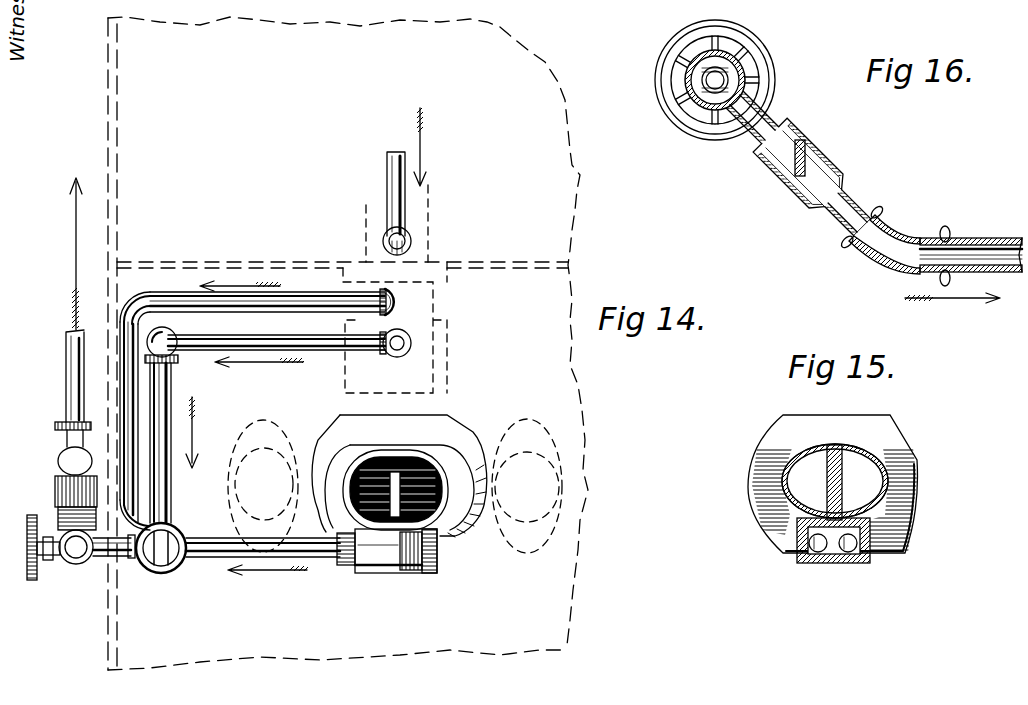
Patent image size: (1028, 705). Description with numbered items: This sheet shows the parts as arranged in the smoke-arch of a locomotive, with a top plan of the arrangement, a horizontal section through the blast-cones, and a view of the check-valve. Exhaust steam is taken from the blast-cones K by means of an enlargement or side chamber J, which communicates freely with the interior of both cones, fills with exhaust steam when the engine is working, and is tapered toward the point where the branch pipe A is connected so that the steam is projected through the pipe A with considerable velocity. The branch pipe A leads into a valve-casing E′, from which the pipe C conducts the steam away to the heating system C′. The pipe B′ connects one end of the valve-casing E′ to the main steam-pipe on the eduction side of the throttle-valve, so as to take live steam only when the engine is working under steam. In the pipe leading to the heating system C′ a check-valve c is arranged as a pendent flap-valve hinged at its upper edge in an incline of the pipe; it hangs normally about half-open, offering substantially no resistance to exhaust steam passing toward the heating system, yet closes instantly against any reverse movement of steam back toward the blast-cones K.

In FIG. 14, the heating system C′ is at (62, 352).
In FIG. 16, the heating system C′ is at (971, 236).
In FIG. 14, the pipe C is at (101, 560).
In FIG. 16, the pipe C is at (778, 118).
In FIG. 16, the check-valve c is at (806, 160).
In FIG. 14, the pipe B′ is at (265, 409).
In FIG. 14, the branch pipe A is at (263, 537).
In FIG. 14, the valve-casing E′ is at (168, 563).
In FIG. 14, the blast-cones K is at (399, 476).
In FIG. 15, the blast-cones K is at (833, 484).
In FIG. 14, the chamber or offset J is at (393, 562).
In FIG. 15, the chamber or offset J is at (800, 560).